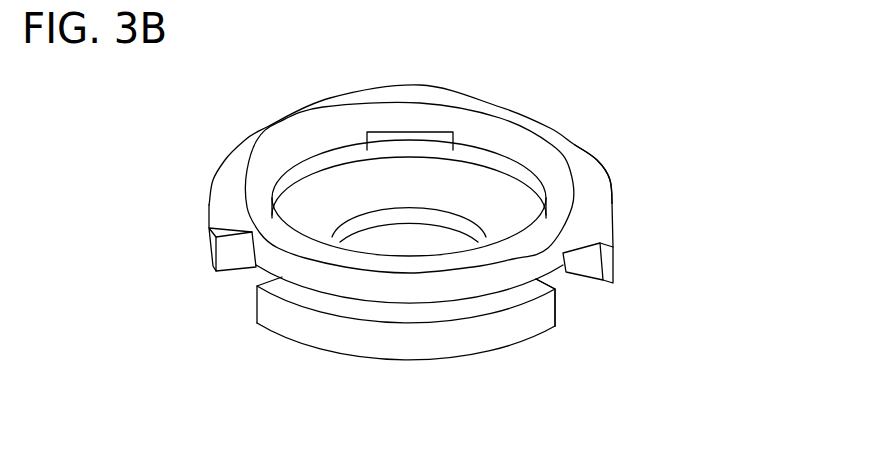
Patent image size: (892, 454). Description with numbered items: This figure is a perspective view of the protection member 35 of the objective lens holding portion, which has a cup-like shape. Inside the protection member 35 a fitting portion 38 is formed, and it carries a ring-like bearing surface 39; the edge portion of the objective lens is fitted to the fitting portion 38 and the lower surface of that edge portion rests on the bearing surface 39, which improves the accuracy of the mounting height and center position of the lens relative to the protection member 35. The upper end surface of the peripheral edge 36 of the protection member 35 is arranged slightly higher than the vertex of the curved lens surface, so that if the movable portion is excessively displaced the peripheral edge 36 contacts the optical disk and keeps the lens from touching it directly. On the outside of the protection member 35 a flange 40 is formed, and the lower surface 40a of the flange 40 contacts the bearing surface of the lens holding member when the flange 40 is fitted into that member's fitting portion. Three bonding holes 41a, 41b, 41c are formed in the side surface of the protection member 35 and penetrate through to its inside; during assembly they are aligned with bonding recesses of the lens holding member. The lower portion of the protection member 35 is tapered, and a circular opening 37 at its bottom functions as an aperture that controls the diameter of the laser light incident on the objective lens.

The protection member 35 is at (602, 128).
The peripheral edge 36 is at (272, 143).
The opening 37 is at (410, 243).
The fitting portion 38 is at (306, 160).
The bearing surface 39 is at (477, 157).
The flange 40 is at (596, 200).
The lower surface 40a is at (588, 282).
The bonding hole 41a is at (245, 281).
The bonding hole 41b is at (570, 293).
The bonding hole 41c is at (412, 145).